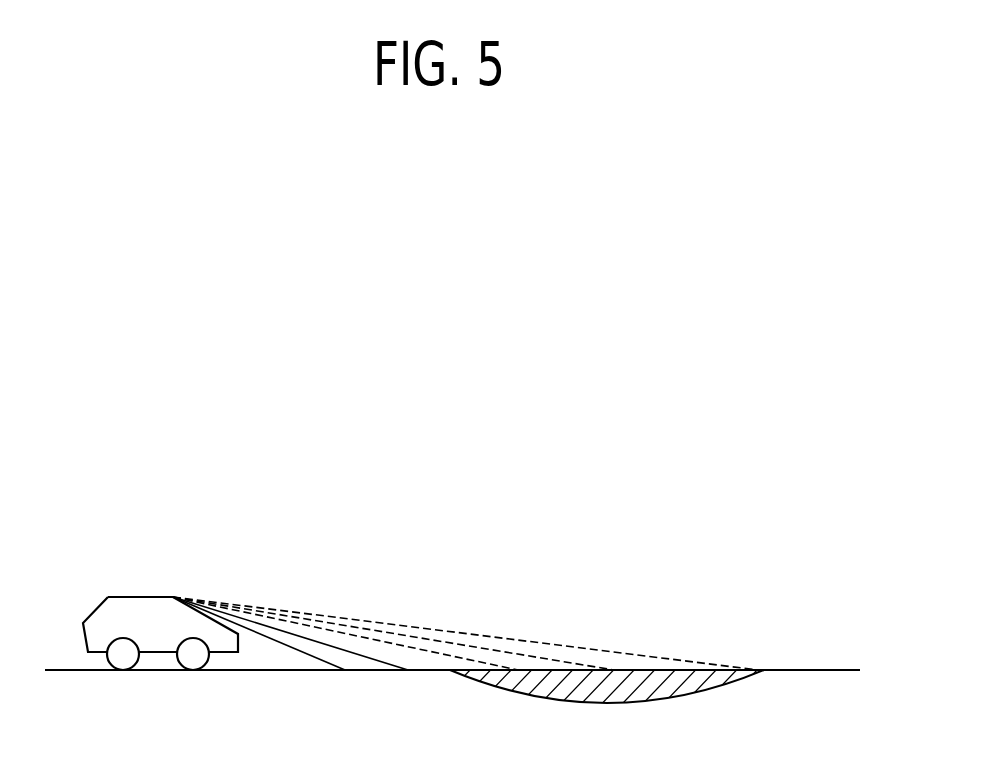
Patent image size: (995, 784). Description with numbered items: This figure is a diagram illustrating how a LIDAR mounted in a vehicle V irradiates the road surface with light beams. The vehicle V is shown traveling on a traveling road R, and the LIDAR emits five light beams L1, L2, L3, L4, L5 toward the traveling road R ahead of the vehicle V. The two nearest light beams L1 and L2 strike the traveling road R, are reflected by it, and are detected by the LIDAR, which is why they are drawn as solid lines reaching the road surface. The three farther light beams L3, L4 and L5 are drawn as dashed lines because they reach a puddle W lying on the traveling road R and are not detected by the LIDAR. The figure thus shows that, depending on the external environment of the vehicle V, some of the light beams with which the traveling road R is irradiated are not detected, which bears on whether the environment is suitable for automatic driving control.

The traveling road R is at (67, 668).
The vehicle V is at (103, 598).
The light beam L1 is at (295, 650).
The light beam L2 is at (378, 662).
The light beam L3 is at (405, 645).
The light beam L4 is at (500, 650).
The light beam L5 is at (603, 650).
The puddle W is at (760, 675).